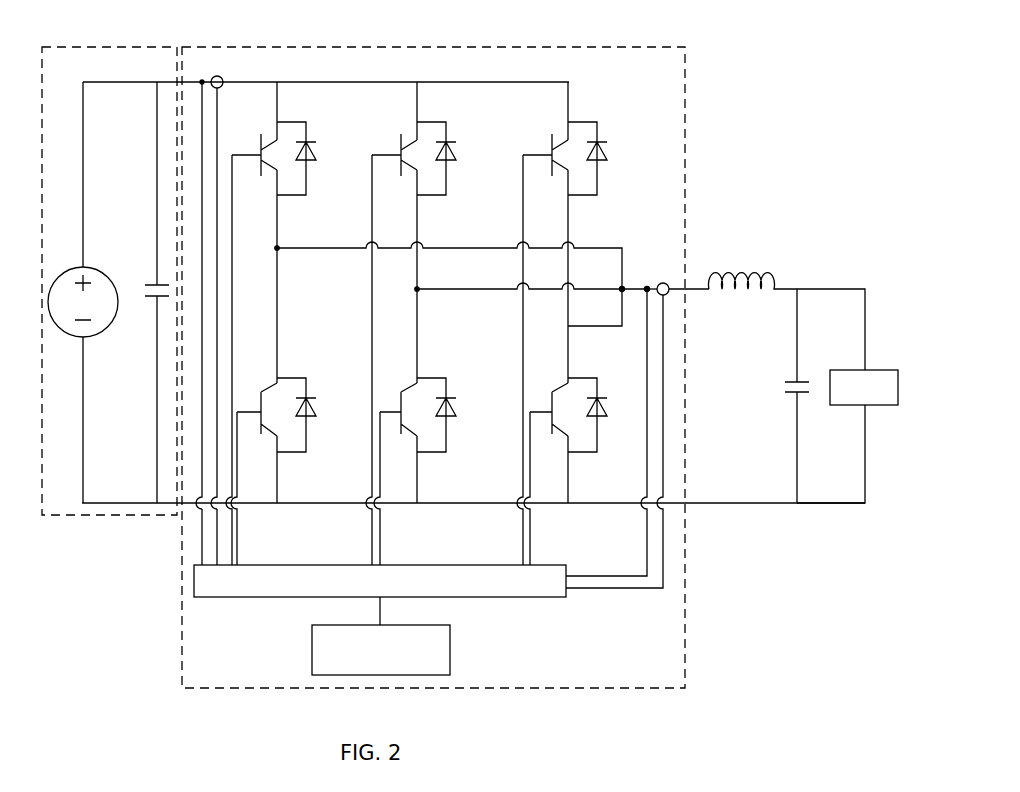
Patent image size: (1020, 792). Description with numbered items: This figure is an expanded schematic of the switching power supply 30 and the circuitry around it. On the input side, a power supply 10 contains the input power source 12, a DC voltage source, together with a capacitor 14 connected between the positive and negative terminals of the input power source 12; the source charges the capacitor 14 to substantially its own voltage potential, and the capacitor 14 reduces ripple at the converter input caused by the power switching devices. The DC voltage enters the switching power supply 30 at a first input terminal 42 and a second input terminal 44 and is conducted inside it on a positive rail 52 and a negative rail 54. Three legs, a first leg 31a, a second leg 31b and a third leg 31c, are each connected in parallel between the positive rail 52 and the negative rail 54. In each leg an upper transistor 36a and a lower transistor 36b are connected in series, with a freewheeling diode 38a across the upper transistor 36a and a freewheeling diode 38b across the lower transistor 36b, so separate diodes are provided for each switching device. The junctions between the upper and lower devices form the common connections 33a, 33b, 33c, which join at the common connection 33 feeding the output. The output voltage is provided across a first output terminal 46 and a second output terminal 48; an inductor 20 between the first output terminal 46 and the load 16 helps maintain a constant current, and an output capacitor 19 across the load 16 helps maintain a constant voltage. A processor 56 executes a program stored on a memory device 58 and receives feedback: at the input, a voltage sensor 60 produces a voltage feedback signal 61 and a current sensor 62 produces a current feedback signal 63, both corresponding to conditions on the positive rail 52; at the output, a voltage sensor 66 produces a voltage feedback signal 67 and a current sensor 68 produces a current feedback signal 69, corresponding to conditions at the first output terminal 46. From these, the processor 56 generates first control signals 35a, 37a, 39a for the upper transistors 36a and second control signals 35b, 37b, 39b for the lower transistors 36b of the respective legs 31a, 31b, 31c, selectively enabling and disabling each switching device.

The power supply 10 is at (118, 46).
The input power source 12 is at (62, 276).
The capacitor 14 is at (151, 282).
The load 16 is at (870, 370).
The output capacitor 19 is at (791, 384).
The inductor 20 is at (760, 270).
The switching power supply 30 is at (660, 46).
The first leg 31a is at (275, 78).
The second leg 31b is at (413, 78).
The third leg 31c is at (565, 78).
The common connection 33 is at (625, 284).
The common connection of first leg 33a is at (282, 246).
The common connection of second leg 33b is at (421, 287).
The common connection of third leg 33c is at (576, 330).
The first control signal 35a is at (236, 531).
The second control signal 35b is at (240, 551).
The transistor 36a is at (257, 140).
The transistor 36b is at (257, 398).
The first control signal 37a is at (370, 533).
The second control signal 37b is at (383, 533).
The freewheeling diode 38a is at (312, 140).
The freewheeling diode 38b is at (312, 400).
The first control signal 39a is at (520, 536).
The second control signal 39b is at (533, 536).
The first input terminal 42 is at (177, 80).
The second input terminal 44 is at (176, 508).
The first output terminal 46 is at (688, 287).
The second output terminal 48 is at (690, 500).
The positive rail 52 is at (362, 80).
The negative rail 54 is at (470, 501).
The processor 56 is at (498, 600).
The memory device 58 is at (452, 652).
The voltage sensor 60 is at (202, 76).
The voltage feedback signal 61 is at (200, 535).
The current sensor 62 is at (223, 76).
The current feedback signal 63 is at (215, 545).
The voltage sensor 66 is at (649, 284).
The voltage feedback signal 67 is at (645, 548).
The current sensor 68 is at (670, 283).
The current feedback signal 69 is at (618, 590).